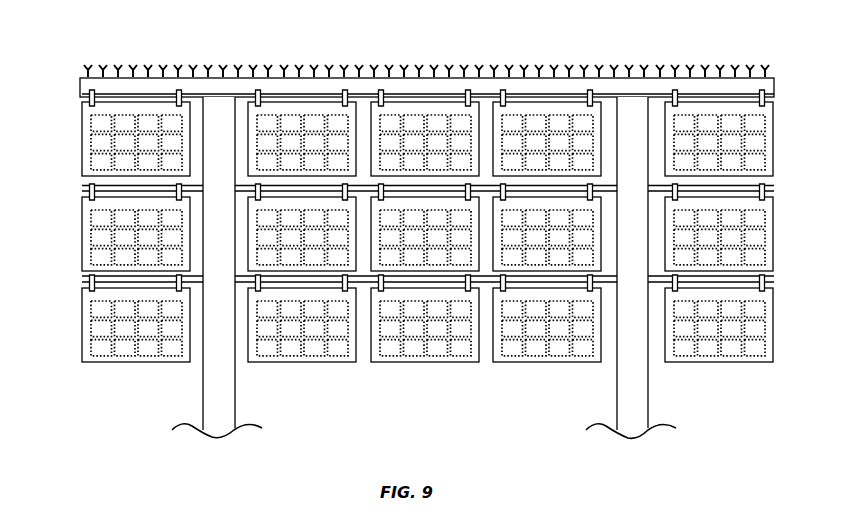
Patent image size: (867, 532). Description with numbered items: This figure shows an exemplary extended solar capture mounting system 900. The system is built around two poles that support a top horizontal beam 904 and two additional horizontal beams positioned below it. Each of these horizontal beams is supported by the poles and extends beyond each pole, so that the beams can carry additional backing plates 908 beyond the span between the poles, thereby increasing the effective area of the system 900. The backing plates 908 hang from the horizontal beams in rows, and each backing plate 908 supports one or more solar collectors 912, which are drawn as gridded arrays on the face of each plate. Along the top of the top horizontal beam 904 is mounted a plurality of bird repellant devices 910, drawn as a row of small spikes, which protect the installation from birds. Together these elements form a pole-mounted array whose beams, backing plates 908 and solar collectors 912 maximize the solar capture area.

The extended solar capture mounting system 900 is at (78, 40).
The top horizontal beam 904 is at (716, 78).
The backing plate 908 is at (84, 345).
The bird repellant device 910 is at (596, 68).
The solar collector 912 is at (93, 350).